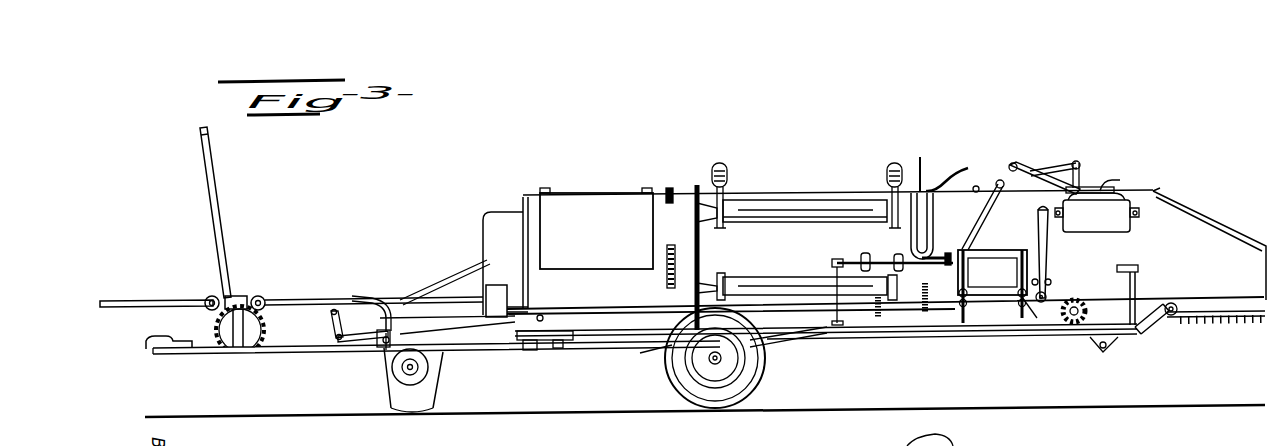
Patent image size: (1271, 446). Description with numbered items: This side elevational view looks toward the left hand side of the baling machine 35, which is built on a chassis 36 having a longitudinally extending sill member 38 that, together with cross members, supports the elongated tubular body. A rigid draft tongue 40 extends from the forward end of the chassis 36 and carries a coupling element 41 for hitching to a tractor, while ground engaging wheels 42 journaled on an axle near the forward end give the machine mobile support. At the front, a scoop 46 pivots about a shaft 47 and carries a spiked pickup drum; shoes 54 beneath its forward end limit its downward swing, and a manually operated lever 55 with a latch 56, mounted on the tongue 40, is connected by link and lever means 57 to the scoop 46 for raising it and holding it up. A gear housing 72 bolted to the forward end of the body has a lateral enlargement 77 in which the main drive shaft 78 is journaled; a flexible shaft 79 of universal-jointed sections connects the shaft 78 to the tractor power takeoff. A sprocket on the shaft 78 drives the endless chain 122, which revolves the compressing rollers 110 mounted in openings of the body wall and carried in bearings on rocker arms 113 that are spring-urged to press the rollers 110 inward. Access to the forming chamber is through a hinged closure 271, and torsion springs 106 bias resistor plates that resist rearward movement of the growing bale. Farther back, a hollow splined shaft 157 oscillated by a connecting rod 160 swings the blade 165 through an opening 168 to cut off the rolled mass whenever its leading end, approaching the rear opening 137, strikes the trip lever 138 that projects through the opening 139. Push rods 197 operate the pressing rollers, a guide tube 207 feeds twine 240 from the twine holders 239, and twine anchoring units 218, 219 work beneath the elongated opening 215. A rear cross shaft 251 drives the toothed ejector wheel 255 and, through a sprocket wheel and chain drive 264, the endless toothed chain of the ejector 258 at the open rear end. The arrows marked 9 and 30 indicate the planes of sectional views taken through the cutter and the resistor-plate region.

The manually operated lever 55 is at (228, 237).
The flexible shaft 79 is at (190, 293).
The latch 56 is at (253, 335).
The coupling element 41 is at (150, 349).
The draft tongue 40 is at (347, 347).
The link and lever means 57 is at (340, 317).
The scoop 46 is at (450, 365).
The shoes 54 is at (430, 412).
The shaft 47 is at (543, 321).
The chassis 36 is at (631, 344).
The sill member 38 is at (943, 330).
The ground engaging wheels 42 is at (757, 385).
The gear housing 72 is at (475, 233).
The lateral enlargement 77 is at (498, 286).
The main drive shaft 78 is at (588, 307).
The hinged closure 271 is at (606, 242).
The section line 30 is at (679, 178).
The torsion spring 106 is at (667, 277).
The endless chain 122 is at (700, 256).
The rocker arms 113 is at (730, 193).
The baling machine 35 is at (808, 182).
The compressing rollers 110 is at (808, 216).
The connecting rod 160 is at (845, 296).
The hollow internally splined shaft 157 is at (850, 258).
The blade 165 is at (896, 254).
The pipe 9 is at (928, 176).
The opening 168 is at (964, 171).
The twine 240 is at (976, 193).
The guide tube 207 is at (975, 218).
The opening 215 is at (995, 250).
The twine anchoring unit 218 is at (972, 282).
The twine anchoring unit 219 is at (992, 292).
The push rods 197 is at (1047, 254).
The twine holders 239 is at (1100, 226).
The opening 137 is at (1197, 213).
The opening 139 is at (1138, 267).
The toothed wheel 255 is at (1057, 327).
The rear cross shaft 251 is at (1103, 353).
The sprocket wheel and chain drive 264 is at (1157, 328).
The ejector 258 is at (1231, 331).
The trip lever 138 is at (904, 438).